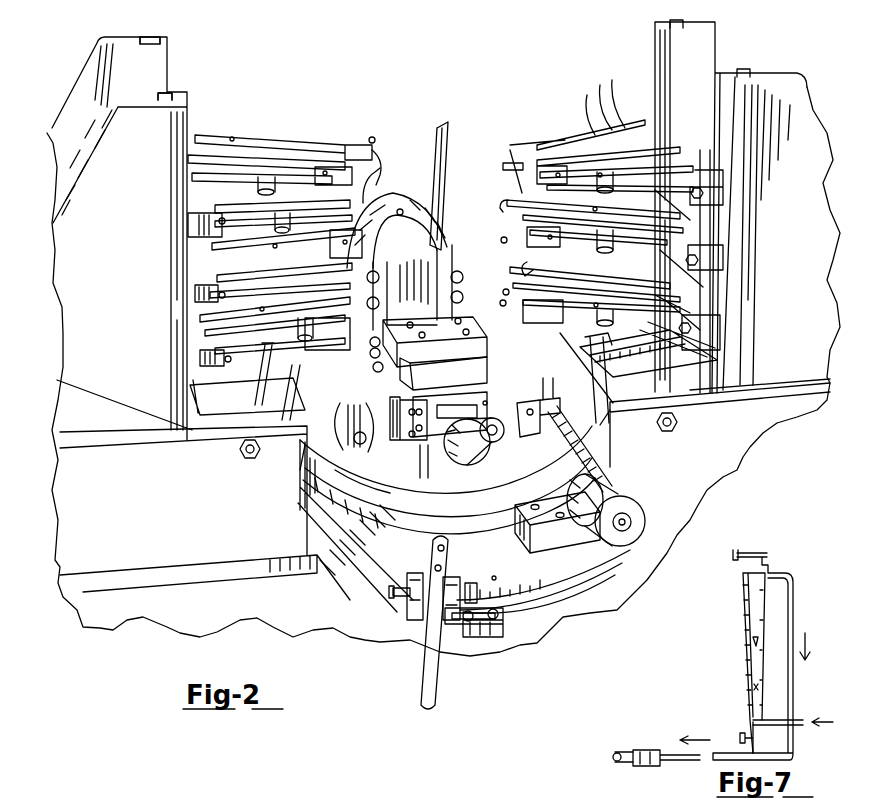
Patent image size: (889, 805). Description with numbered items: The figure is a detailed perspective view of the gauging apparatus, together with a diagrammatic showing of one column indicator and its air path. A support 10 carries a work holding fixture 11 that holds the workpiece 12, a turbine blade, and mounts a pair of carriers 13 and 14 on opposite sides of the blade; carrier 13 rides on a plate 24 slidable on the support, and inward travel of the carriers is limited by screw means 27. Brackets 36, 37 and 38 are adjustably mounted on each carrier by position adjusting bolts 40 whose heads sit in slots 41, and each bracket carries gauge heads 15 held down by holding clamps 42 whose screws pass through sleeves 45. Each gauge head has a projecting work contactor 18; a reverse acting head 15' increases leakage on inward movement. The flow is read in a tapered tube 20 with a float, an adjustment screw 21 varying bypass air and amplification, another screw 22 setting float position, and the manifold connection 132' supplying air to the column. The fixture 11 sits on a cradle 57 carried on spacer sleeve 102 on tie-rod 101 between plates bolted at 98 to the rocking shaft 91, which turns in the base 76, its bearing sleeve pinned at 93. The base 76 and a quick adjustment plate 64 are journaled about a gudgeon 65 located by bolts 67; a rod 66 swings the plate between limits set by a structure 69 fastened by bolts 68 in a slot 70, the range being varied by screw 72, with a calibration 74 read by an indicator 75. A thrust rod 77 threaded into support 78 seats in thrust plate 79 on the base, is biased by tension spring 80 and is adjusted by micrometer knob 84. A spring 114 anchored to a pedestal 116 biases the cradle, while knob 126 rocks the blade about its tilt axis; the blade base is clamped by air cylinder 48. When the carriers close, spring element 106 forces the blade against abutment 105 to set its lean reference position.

In FIG. 2, the support 10 is at (270, 610).
In FIG. 2, the work holding fixture 11 is at (480, 355).
In FIG. 2, the workpiece 12 is at (447, 124).
In FIG. 2, the carrier 13 is at (119, 238).
In FIG. 2, the carrier 14 is at (731, 207).
In FIG. 2, the gauge head 15 is at (519, 262).
In FIG. 7, the gauge head 15 is at (671, 738).
In FIG. 2, the reverse acting gauge head 15' is at (355, 144).
In FIG. 2, the work contactor 18 is at (371, 140).
In FIG. 7, the work contactor 18 is at (618, 752).
In FIG. 7, the tapered tube 20 is at (744, 612).
In FIG. 7, the adjustment screw 21 is at (740, 738).
In FIG. 7, the adjustment screw 22 is at (745, 552).
In FIG. 2, the plate 24 is at (662, 365).
In FIG. 2, the screw means 27 is at (262, 387).
In FIG. 2, the bracket 36 is at (436, 175).
In FIG. 2, the bracket 37 is at (449, 243).
In FIG. 2, the bracket 38 is at (437, 308).
In FIG. 2, the position adjusting bolt 40 is at (190, 216).
In FIG. 2, the slot 41 is at (172, 92).
In FIG. 2, the holding clamp 42 is at (232, 137).
In FIG. 2, the sleeve 45 is at (262, 188).
In FIG. 2, the air cylinder 48 is at (435, 495).
In FIG. 2, the cradle 57 is at (443, 373).
In FIG. 2, the quick adjustment plate 64 is at (587, 573).
In FIG. 2, the gudgeon 65 is at (348, 428).
In FIG. 2, the rod 66 is at (421, 697).
In FIG. 2, the bolt 67 is at (352, 441).
In FIG. 2, the bolt 68 is at (475, 637).
In FIG. 2, the structure 69 is at (448, 630).
In FIG. 2, the slot 70 is at (490, 632).
In FIG. 2, the screw 72 is at (398, 598).
In FIG. 2, the calibration 74 is at (527, 572).
In FIG. 2, the indicator 75 is at (472, 583).
In FIG. 2, the base 76 is at (388, 203).
In FIG. 2, the thrust rod 77 is at (575, 447).
In FIG. 2, the support 78 is at (557, 522).
In FIG. 2, the thrust plate 79 is at (533, 410).
In FIG. 2, the tension spring 80 is at (567, 488).
In FIG. 2, the micrometer knob 84 is at (637, 524).
In FIG. 2, the rocking shaft 91 is at (412, 287).
In FIG. 2, the pin 93 is at (402, 209).
In FIG. 2, the bolt 98 is at (380, 299).
In FIG. 2, the tie-rod 101 is at (418, 460).
In FIG. 2, the spacer sleeve 102 is at (370, 360).
In FIG. 2, the abutment 105 is at (505, 166).
In FIG. 2, the spring element 106 is at (383, 190).
In FIG. 2, the spring 114 is at (372, 482).
In FIG. 2, the pedestal 116 is at (352, 410).
In FIG. 2, the micrometer adjusting knob 126 is at (490, 462).
In FIG. 7, the connection 132' is at (796, 679).